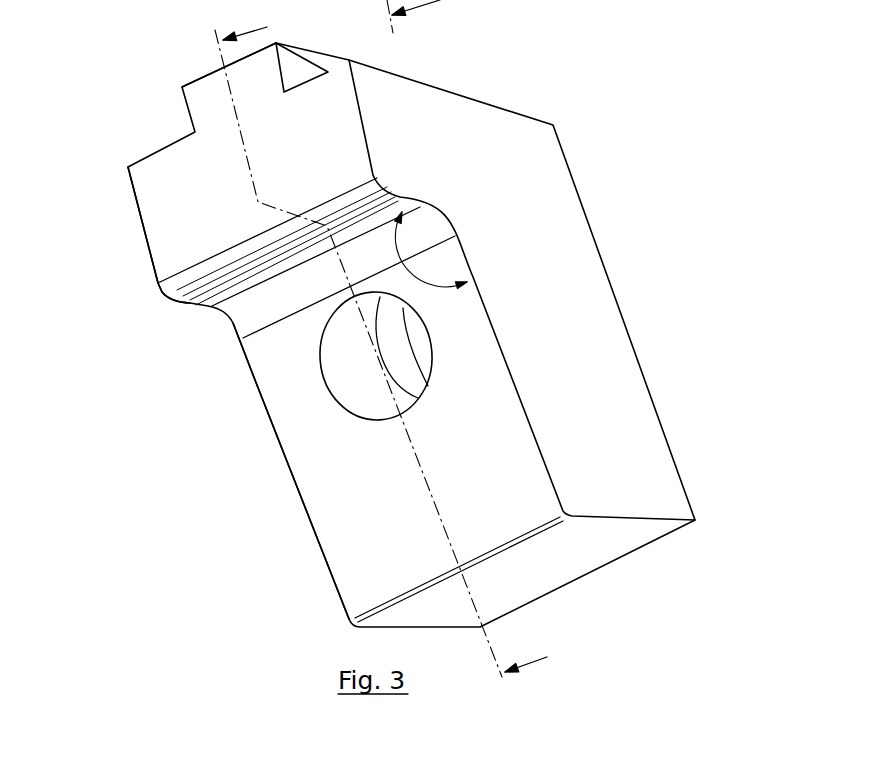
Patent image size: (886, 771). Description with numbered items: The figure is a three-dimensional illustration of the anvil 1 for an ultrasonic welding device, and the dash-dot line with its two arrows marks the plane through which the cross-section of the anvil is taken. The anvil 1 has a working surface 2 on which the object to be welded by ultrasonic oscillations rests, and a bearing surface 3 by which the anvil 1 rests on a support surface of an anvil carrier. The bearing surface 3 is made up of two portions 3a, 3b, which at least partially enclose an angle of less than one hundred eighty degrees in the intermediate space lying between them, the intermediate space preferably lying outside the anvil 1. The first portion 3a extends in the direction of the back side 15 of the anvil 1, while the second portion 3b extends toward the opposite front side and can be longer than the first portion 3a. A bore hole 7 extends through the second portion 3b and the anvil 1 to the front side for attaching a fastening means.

The anvil 1 is at (633, 443).
The working surface 2 is at (202, 78).
The bearing surface 3 is at (295, 394).
The first portion 3a is at (160, 291).
The second portion 3b is at (347, 510).
The bore hole 7 is at (343, 370).
The back side 15 is at (312, 148).